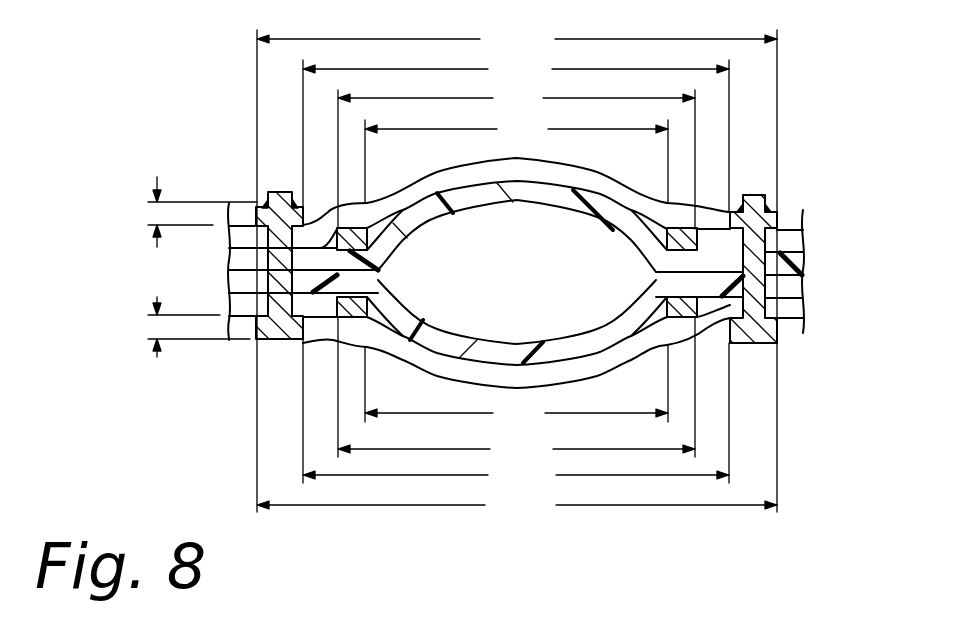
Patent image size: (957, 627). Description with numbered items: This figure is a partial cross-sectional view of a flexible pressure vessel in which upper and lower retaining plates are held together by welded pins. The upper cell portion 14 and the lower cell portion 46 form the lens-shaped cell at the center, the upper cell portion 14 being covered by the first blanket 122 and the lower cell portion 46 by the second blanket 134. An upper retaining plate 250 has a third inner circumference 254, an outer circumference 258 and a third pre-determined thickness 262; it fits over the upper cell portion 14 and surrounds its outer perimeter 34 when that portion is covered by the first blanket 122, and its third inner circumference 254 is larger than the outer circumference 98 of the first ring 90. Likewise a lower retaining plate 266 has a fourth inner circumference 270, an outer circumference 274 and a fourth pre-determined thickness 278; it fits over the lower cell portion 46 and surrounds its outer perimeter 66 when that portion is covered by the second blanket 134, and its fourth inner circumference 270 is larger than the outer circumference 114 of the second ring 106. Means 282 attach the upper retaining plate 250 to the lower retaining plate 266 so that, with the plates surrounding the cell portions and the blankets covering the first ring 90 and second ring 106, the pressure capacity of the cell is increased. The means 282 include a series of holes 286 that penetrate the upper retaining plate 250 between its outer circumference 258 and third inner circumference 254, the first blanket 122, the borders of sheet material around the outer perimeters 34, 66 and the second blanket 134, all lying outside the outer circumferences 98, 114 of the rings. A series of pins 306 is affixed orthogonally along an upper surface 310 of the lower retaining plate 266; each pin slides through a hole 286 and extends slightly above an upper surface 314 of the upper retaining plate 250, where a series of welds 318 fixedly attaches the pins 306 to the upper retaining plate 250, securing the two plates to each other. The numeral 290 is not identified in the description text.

The upper cell portion 14 is at (543, 198).
The lower cell portion 46 is at (445, 340).
The first ring 90 is at (230, 262).
The second ring 106 is at (343, 315).
The pins 306 is at (337, 245).
The first blanket 122 is at (707, 222).
The second blanket 134 is at (707, 328).
The means for attaching 282 is at (744, 195).
The welds 318 is at (741, 206).
The upper surface of the upper retaining plate 314 is at (777, 210).
The upper retaining plate 250 is at (778, 218).
The holes 286 is at (790, 234).
The bore wall 290 is at (766, 287).
The upper surface of the lower retaining plate 310 is at (790, 310).
The lower retaining plate 266 is at (777, 342).
The outer circumference of the upper retaining plate 258 is at (517, 269).
The third inner circumference 254 is at (516, 269).
The outer circumference of the first ring 98 is at (516, 271).
The outer perimeter of the upper cell portion 34 is at (516, 269).
The outer perimeter of the lower cell portion 66 is at (516, 415).
The outer circumference of the second ring 114 is at (516, 451).
The fourth inner circumference 270 is at (516, 479).
The outer circumference of the lower retaining plate 274 is at (517, 511).
The third pre-determined thickness 262 is at (157, 212).
The fourth pre-determined thickness 278 is at (150, 327).